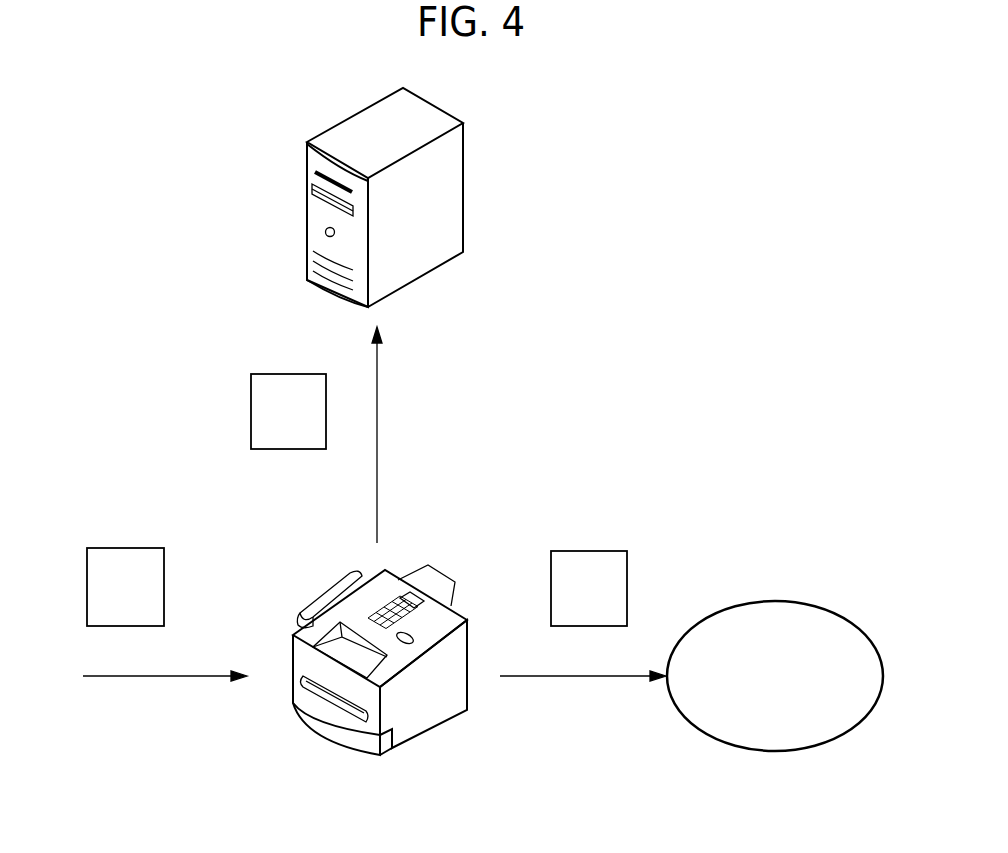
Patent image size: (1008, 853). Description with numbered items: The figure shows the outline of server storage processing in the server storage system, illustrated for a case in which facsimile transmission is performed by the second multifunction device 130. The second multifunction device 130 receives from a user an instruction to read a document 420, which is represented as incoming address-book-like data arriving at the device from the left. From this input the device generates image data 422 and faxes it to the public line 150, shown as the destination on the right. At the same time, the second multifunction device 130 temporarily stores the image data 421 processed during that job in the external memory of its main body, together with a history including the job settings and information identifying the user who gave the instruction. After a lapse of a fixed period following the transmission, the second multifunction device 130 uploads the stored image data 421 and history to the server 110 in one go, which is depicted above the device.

The server 110 is at (450, 114).
The second multifunction device 130 is at (293, 700).
The public line 150 is at (788, 601).
The document 420 is at (164, 580).
The image data 421 is at (251, 404).
The image data 422 is at (627, 580).